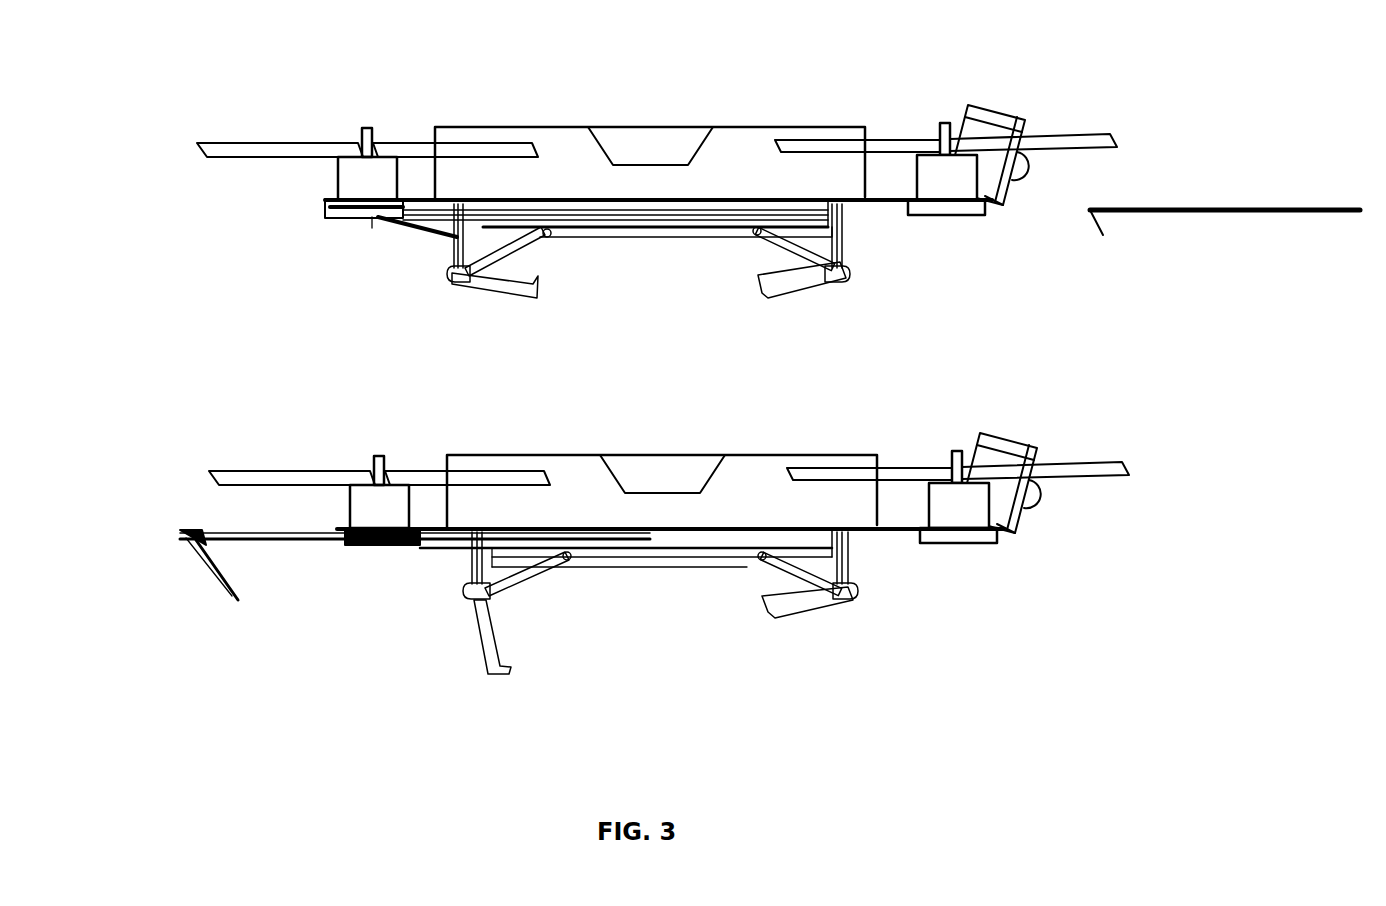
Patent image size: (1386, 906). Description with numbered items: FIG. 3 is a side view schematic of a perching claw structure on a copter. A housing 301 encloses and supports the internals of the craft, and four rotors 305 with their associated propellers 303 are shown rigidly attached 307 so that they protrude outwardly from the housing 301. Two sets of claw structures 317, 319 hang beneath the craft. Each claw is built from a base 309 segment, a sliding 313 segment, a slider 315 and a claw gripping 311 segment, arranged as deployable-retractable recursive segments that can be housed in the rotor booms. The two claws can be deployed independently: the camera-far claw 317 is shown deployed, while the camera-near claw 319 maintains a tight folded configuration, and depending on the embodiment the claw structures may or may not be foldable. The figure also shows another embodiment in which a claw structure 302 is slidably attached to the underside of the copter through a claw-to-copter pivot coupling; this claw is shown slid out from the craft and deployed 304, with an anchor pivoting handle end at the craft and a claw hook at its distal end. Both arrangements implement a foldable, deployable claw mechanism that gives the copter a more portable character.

The housing 301 is at (776, 135).
The claw structure 302 is at (457, 245).
The propellers 303 is at (339, 106).
The extended deployed claw 304 is at (380, 518).
The rotors 305 is at (294, 186).
The rigid attachment 307 is at (362, 243).
The base segment 309 is at (406, 282).
The claw gripping segment 311 is at (483, 322).
The sliding segment 313 is at (528, 287).
The slider 315 is at (686, 287).
The camera-far claw structure 317 is at (450, 637).
The camera-near claw structure 319 is at (850, 623).